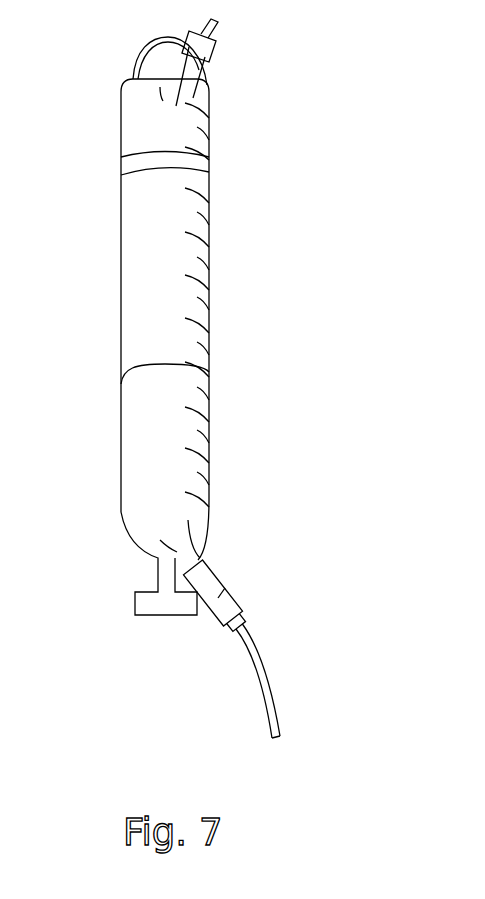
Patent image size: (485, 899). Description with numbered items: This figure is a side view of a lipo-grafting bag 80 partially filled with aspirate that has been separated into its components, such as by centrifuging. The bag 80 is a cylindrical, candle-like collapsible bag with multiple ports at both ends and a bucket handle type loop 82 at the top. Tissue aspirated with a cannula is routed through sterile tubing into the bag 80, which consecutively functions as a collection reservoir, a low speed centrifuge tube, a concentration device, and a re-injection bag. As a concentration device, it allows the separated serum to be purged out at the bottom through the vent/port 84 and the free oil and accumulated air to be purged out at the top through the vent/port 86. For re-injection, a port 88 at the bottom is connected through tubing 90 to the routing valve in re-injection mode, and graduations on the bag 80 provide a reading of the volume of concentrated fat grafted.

The collapsible bag 80 is at (270, 242).
The loop 82 is at (135, 34).
The vent/port 84 is at (158, 576).
The vent/port 86 is at (177, 97).
The port 88 is at (220, 593).
The tubing 90 is at (263, 649).